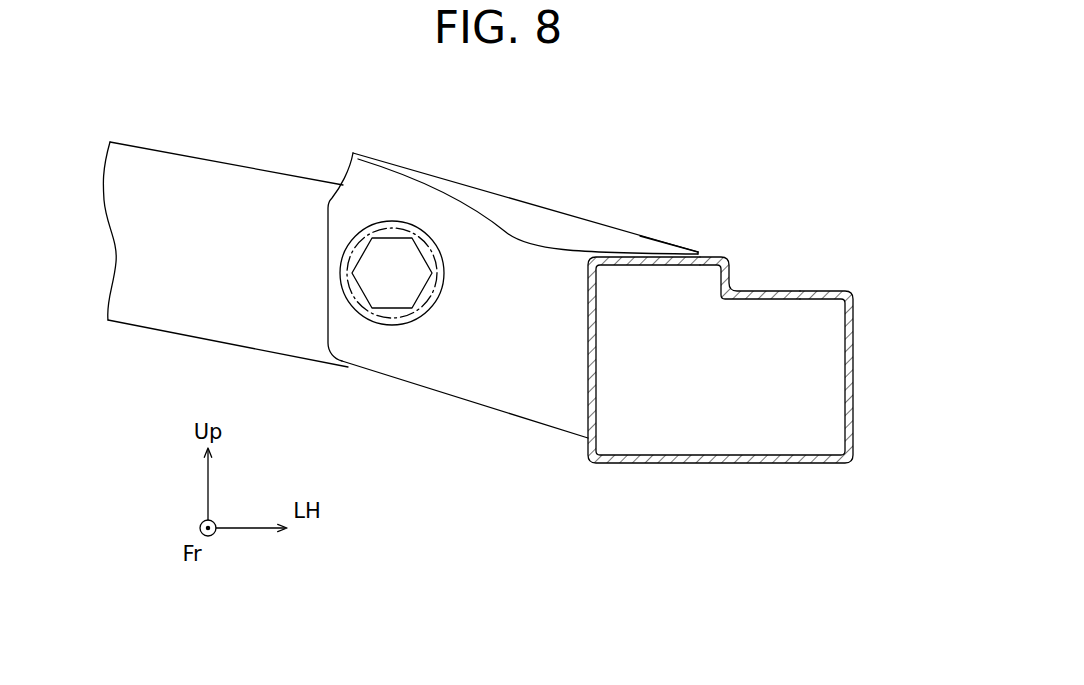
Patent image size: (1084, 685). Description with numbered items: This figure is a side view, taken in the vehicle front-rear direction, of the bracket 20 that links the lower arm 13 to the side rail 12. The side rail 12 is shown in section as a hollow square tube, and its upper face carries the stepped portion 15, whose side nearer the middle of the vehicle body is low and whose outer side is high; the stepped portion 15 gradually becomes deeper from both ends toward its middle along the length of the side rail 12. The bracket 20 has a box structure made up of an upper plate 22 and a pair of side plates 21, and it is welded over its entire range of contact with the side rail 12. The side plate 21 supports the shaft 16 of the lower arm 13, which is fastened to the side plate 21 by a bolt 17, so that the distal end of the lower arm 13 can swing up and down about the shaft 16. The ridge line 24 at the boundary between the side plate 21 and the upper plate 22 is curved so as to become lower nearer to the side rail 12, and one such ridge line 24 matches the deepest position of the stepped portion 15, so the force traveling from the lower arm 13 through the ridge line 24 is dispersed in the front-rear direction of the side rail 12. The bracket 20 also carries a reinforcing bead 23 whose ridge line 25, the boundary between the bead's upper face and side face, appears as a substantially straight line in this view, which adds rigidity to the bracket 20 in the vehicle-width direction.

The side rail 12 is at (720, 379).
The lower arm 13 is at (185, 182).
The stepped portion 15 is at (737, 281).
The shaft 16 is at (382, 217).
The bolt 17 is at (392, 290).
The bracket 20 is at (505, 280).
The side plate 21 is at (477, 400).
The upper plate 22 is at (468, 202).
The reinforcing bead 23 is at (570, 223).
The ridge line 24 is at (502, 222).
The ridge line of reinforcing bead 25 is at (622, 222).